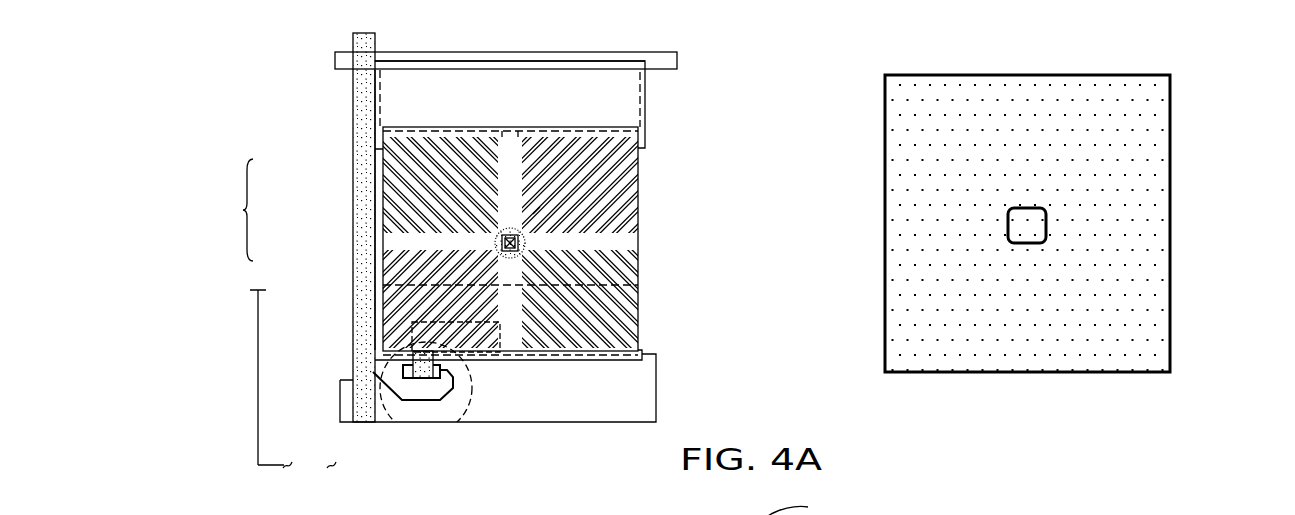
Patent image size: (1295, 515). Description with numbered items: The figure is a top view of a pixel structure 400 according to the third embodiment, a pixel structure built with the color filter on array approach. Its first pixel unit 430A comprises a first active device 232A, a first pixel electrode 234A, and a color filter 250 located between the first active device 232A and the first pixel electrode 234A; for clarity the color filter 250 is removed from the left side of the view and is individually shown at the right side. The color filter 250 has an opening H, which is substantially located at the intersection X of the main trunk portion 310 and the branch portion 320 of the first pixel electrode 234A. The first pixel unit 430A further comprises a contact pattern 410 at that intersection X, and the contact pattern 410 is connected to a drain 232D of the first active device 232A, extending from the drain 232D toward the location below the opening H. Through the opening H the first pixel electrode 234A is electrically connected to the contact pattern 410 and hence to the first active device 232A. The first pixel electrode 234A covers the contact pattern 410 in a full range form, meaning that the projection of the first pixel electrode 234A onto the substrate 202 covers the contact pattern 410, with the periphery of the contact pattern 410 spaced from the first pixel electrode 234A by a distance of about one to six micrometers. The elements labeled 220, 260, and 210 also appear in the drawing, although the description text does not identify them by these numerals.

The cover plate 220 is at (362, 43).
The sidewall 260 is at (373, 94).
The first pixel electrode 234A is at (368, 178).
The first active device 232A is at (412, 325).
The first pixel unit 430A is at (221, 210).
The main trunk portion 310 is at (513, 137).
The branch portion 320 is at (634, 249).
The contact pattern 410 is at (642, 290).
The intersection X is at (533, 214).
The opening H is at (522, 243).
The drain 232D is at (428, 370).
The base 210 is at (473, 408).
The substrate 202 is at (293, 402).
The color filter 250 is at (1105, 88).
The pixel structure 400 is at (1277, 381).